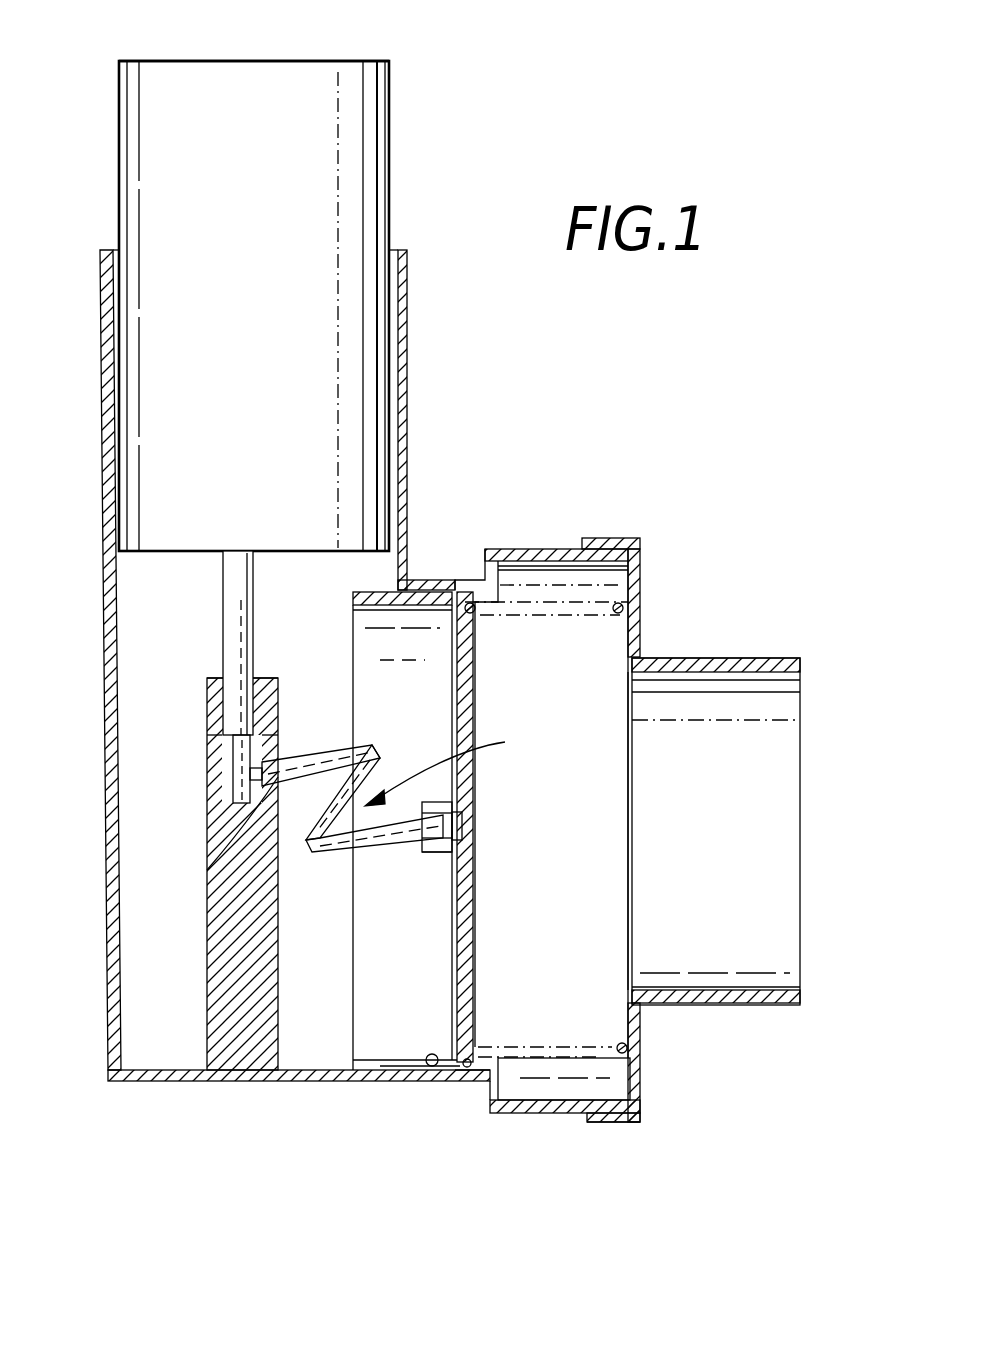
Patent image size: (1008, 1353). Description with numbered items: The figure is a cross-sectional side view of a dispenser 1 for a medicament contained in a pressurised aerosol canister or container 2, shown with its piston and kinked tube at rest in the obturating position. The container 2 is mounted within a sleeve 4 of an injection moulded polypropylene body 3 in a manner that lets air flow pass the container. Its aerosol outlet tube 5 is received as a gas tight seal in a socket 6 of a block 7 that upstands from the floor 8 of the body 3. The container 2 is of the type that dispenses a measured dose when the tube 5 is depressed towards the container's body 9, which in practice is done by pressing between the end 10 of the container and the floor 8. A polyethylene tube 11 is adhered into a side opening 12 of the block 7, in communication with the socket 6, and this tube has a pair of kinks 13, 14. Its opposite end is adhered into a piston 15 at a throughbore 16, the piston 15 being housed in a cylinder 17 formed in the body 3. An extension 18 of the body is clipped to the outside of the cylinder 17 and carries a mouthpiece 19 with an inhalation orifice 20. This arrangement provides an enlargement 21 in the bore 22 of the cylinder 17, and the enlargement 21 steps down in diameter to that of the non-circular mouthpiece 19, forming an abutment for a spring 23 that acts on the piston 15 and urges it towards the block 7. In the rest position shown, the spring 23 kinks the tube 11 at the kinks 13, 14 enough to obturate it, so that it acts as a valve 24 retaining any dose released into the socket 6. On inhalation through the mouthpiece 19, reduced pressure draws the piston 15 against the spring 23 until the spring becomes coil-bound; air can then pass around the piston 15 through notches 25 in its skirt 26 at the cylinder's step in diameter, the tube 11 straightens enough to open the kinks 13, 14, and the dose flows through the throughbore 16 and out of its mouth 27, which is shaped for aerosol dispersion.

The dispenser 1 is at (628, 1168).
The pressurised aerosol canister 2 is at (355, 152).
The body 3 is at (106, 910).
The sleeve 4 is at (407, 400).
The aerosol outlet tube 5 is at (235, 627).
The socket 6 is at (233, 722).
The block 7 is at (243, 987).
The floor 8 is at (298, 1076).
The container body 9 is at (268, 372).
The end of the container 10 is at (243, 62).
The polyethylene tube 11 is at (300, 765).
The side opening 12 is at (258, 800).
The kink 13 is at (376, 746).
The kink 14 is at (313, 846).
The piston 15 is at (470, 690).
The throughbore 16 is at (462, 836).
The cylinder 17 is at (465, 1074).
The extension 18 is at (640, 634).
The mouthpiece 19 is at (747, 665).
The inhalation orifice 20 is at (812, 830).
The enlargement 21 is at (556, 1095).
The bore 22 is at (408, 1075).
The spring 23 is at (617, 1070).
The valve 24 is at (452, 764).
The notches 25 is at (378, 1062).
The skirt 26 is at (428, 1058).
The mouth 27 is at (438, 852).